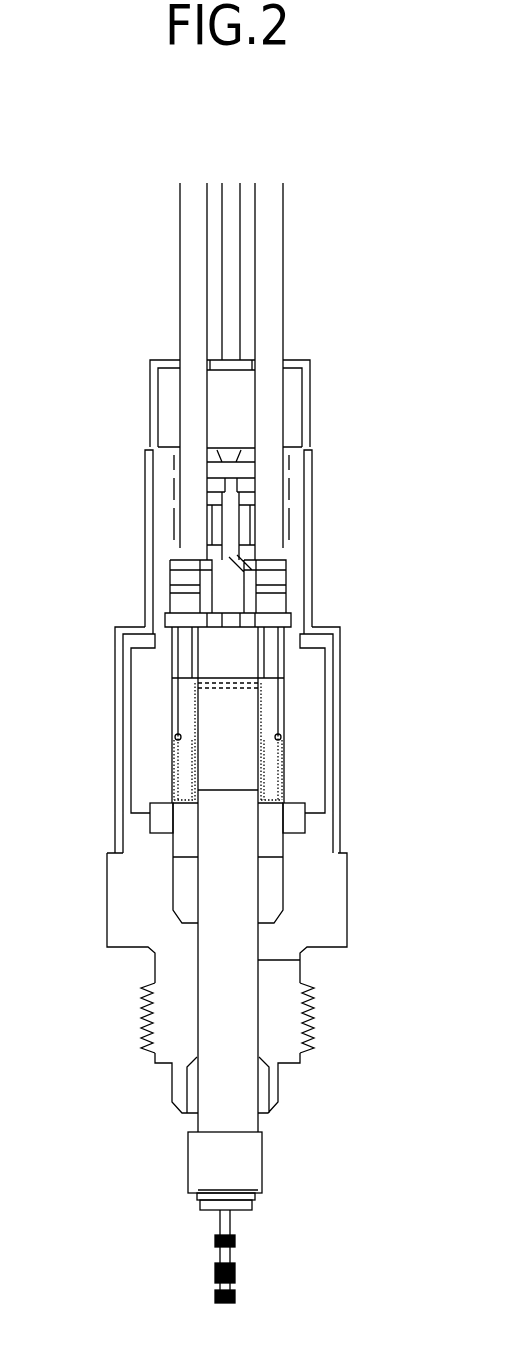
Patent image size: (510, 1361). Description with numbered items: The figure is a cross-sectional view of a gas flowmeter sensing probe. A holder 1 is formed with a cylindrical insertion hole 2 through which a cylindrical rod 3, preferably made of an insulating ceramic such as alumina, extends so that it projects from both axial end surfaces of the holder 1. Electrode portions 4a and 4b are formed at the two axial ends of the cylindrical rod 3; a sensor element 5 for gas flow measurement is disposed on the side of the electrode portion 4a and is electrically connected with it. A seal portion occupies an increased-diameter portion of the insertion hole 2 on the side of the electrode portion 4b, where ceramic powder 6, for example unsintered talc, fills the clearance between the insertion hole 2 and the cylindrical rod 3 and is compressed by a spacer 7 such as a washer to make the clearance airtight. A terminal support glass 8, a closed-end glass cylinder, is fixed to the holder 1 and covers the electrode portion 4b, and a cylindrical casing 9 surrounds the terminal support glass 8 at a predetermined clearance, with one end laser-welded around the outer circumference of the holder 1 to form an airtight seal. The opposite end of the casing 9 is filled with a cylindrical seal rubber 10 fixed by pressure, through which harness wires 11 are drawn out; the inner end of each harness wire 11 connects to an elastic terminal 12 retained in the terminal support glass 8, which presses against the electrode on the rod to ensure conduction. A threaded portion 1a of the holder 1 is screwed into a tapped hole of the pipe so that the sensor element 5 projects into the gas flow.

The holder 1 is at (330, 900).
The threaded portion 1a is at (310, 1017).
The insertion hole 2 is at (258, 963).
The cylindrical rod 3 is at (215, 1083).
The electrode portion 4a is at (263, 1158).
The electrode portion 4b is at (233, 722).
The sensor element 5 is at (235, 1267).
The ceramic powder 6 is at (177, 877).
The spacer 7 is at (188, 827).
The terminal support glass 8 is at (147, 718).
The casing 9 is at (313, 530).
The seal rubber 10 is at (150, 402).
The harness wires 11 is at (270, 295).
The terminal 12 is at (260, 762).